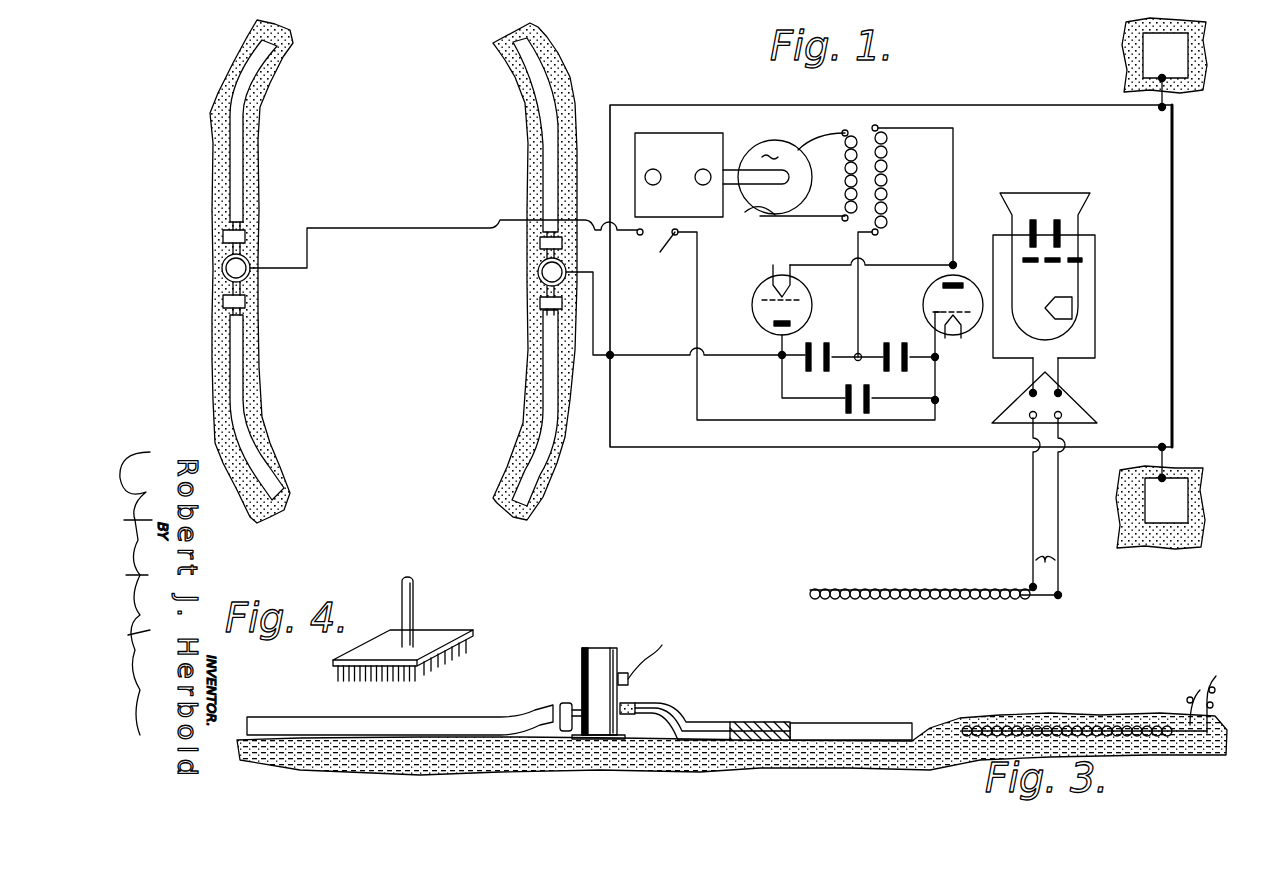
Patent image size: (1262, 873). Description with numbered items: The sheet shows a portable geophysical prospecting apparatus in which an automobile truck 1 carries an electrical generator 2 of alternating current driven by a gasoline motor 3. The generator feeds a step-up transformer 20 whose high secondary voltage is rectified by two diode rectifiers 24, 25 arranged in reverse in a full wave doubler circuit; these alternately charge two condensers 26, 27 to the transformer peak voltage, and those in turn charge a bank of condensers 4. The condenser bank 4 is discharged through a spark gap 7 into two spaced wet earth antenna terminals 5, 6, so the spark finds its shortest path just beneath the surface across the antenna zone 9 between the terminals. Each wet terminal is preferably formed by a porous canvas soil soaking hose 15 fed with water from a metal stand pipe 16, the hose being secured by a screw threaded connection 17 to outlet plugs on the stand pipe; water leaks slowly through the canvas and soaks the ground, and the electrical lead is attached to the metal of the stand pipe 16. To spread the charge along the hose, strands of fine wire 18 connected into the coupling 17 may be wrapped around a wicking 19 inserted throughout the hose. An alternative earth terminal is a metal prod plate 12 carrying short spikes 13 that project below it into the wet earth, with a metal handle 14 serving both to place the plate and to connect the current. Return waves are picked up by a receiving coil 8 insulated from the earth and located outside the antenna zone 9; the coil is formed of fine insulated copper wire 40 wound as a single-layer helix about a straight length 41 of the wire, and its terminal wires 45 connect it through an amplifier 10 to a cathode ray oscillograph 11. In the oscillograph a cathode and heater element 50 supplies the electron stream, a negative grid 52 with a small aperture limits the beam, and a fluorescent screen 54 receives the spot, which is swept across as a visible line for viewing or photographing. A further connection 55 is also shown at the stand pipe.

In FIG. 1, the automobile truck 1 is at (945, 105).
In FIG. 1, the electrical generator 2 is at (784, 174).
In FIG. 1, the gasoline motor 3 is at (679, 175).
In FIG. 1, the bank of condensers 4 is at (845, 406).
In FIG. 1, the earth antenna terminal 5 is at (262, 152).
In FIG. 1, the earth antenna terminal 6 is at (528, 358).
In FIG. 1, the spark gap 7 is at (660, 252).
In FIG. 1, the receiving coil 8 is at (878, 589).
In FIG. 3, the receiving coil 8 is at (1052, 726).
In FIG. 1, the antenna zone 9 is at (385, 335).
In FIG. 1, the amplifier 10 is at (1078, 406).
In FIG. 1, the cathode ray oscillograph 11 is at (1070, 335).
In FIG. 1, the metal prod plate 12 is at (1161, 283).
In FIG. 4, the metal prod plate 12 is at (437, 638).
In FIG. 4, the spikes 13 is at (450, 662).
In FIG. 4, the metal handle 14 is at (413, 598).
In FIG. 1, the soil soaking hose 15 is at (245, 110).
In FIG. 3, the soil soaking hose 15 is at (370, 718).
In FIG. 1, the stand pipe 16 is at (223, 264).
In FIG. 3, the stand pipe 16 is at (583, 655).
In FIG. 1, the hose pipe screw threaded connection 17 is at (248, 237).
In FIG. 3, the hose pipe screw threaded connection 17 is at (566, 702).
In FIG. 3, the fine wire strands 18 is at (690, 718).
In FIG. 3, the wicking 19 is at (758, 722).
In FIG. 1, the step-up transformer 20 is at (864, 169).
In FIG. 1, the diode rectifier 24 is at (762, 286).
In FIG. 1, the diode rectifier 25 is at (935, 290).
In FIG. 1, the condenser 26 is at (818, 344).
In FIG. 1, the condenser 27 is at (902, 336).
In FIG. 1, the fine insulated copper wire 40 is at (995, 590).
In FIG. 1, the straight length of insulated wire 41 is at (1052, 598).
In FIG. 1, the terminal wires 45 is at (1049, 506).
In FIG. 3, the terminal wires 45 is at (1204, 693).
In FIG. 1, the cathode and heater element 50 is at (1068, 303).
In FIG. 1, the negative grid 52 is at (1060, 263).
In FIG. 1, the fluorescent screen 54 is at (1043, 195).
In FIG. 3, the terminal 55 is at (643, 665).